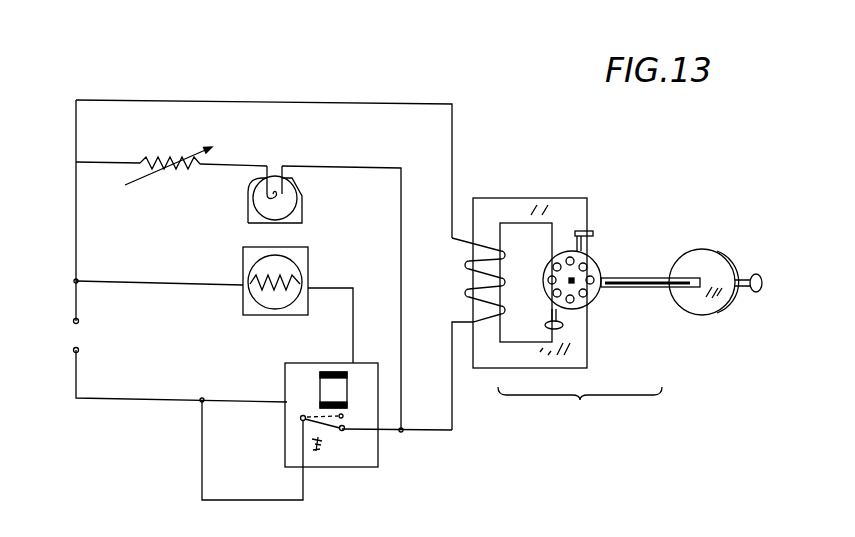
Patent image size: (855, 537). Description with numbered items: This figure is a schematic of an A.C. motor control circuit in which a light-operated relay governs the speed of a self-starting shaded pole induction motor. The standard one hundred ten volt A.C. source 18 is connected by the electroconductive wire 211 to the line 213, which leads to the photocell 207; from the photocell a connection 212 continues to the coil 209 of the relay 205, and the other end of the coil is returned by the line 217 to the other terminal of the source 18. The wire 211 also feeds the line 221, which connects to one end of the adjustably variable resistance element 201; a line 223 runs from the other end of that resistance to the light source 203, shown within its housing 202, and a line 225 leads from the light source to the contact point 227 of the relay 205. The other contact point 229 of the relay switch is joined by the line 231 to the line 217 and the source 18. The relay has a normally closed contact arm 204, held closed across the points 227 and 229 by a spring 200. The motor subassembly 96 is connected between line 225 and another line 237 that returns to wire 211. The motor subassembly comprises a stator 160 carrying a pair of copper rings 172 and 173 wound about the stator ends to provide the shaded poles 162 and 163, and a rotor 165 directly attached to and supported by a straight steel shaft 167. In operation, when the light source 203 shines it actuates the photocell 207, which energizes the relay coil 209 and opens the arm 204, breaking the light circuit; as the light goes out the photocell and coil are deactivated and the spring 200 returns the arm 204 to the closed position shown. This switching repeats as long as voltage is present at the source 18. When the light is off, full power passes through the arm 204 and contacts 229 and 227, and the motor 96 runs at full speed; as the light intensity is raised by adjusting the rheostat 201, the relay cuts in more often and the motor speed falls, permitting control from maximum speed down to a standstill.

The A.C. voltage source 18 is at (75, 336).
The motor subassembly 96 is at (630, 333).
The stator 160 is at (565, 198).
The shaded pole 162 is at (591, 248).
The shaded pole 163 is at (550, 309).
The rotor 165 is at (593, 293).
The shaft 167 is at (640, 278).
The copper ring 172 is at (586, 234).
The copper ring 173 is at (547, 323).
The spring 200 is at (312, 441).
The adjustably variable resistance element 201 is at (168, 159).
The lamp housing 202 is at (304, 211).
The light source 203 is at (300, 188).
The contact arm 204 is at (331, 433).
The relay 205 is at (303, 358).
The photocell 207 is at (247, 260).
The relay coil 209 is at (343, 390).
The electroconductive wire line 211 is at (77, 219).
The conductor 212 is at (357, 309).
The line 213 is at (158, 258).
The line 217 is at (246, 400).
The line 221 is at (125, 161).
The line 223 is at (243, 167).
The line 225 is at (346, 288).
The contact point 227 is at (344, 431).
The contact point 229 is at (301, 418).
The line 231 is at (273, 499).
The line 237 is at (373, 103).